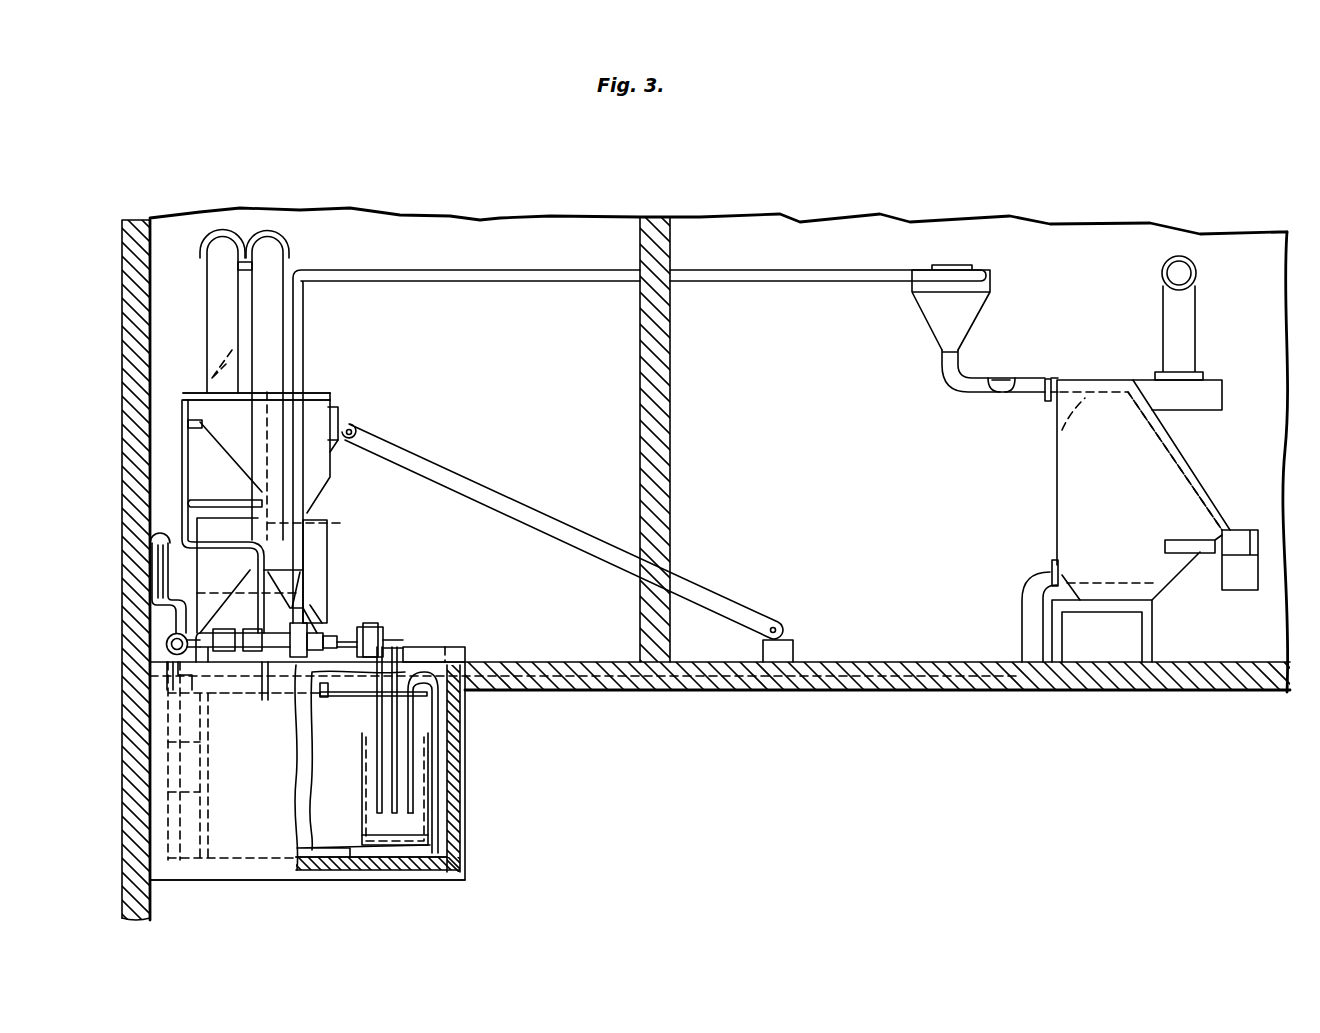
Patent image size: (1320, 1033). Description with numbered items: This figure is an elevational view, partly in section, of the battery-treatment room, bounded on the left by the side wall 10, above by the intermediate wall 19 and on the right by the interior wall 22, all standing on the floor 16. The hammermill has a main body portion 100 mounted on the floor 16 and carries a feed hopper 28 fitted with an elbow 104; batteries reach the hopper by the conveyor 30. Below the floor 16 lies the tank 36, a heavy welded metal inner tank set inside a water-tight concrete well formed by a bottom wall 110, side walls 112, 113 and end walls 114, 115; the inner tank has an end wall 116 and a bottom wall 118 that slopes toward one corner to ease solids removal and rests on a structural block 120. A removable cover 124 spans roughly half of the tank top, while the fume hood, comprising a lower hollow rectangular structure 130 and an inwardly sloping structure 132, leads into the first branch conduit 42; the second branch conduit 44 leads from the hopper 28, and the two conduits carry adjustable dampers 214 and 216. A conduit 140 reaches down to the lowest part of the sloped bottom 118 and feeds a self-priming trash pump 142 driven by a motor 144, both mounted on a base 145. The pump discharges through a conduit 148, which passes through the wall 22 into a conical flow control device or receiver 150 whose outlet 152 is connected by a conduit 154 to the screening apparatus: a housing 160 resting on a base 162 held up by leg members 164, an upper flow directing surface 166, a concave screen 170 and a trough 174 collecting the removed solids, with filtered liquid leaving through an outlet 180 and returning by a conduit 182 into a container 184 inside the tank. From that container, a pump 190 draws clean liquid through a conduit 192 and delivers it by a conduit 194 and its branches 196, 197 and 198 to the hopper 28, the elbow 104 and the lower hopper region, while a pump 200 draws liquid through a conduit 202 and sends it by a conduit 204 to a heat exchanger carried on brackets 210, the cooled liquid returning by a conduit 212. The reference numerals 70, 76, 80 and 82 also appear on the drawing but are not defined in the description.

The side wall 10 is at (122, 332).
The floor 16 is at (582, 662).
The intermediate wall 19 is at (541, 222).
The interior wall 22 is at (670, 385).
The feed hopper 28 is at (325, 393).
The conveyor 30 is at (534, 520).
The tank 36 is at (455, 652).
The first branch conduit 42 is at (298, 266).
The second branch conduit 44 is at (207, 284).
The grinder chute 70 is at (1198, 460).
The grinder unit 76 is at (1082, 380).
The mounting plate 80 is at (1222, 394).
The exhaust pipe 82 is at (1198, 320).
The main body portion 100 is at (322, 562).
The elbow 104 is at (215, 446).
The bottom wall 110 is at (298, 880).
The side wall 112 is at (236, 830).
The side wall 113 is at (460, 752).
The end wall 114 is at (168, 793).
The end wall 115 is at (460, 786).
The end wall 116 is at (460, 817).
The bottom wall 118 is at (352, 872).
The structural block 120 is at (460, 853).
The removable cover 124 is at (432, 637).
The lower hollow rectangular structure 130 is at (168, 690).
The inwardly sloping structure 132 is at (328, 598).
The conduit 140 is at (222, 662).
The pump 142 is at (308, 622).
The motor 144 is at (375, 622).
The base 145 is at (325, 630).
The conduit 148 is at (735, 282).
The flow control device 150 is at (922, 311).
The outlet 152 is at (940, 372).
The conduit 154 is at (1000, 396).
The housing 160 is at (1057, 466).
The base 162 is at (1158, 598).
The leg members 164 is at (1142, 636).
The upper flow directing surface 166 is at (1062, 422).
The screen 170 is at (168, 742).
The trough 174 is at (1240, 528).
The outlet 180 is at (1058, 562).
The conduit 182 is at (1020, 602).
The container 184 is at (372, 756).
The pump 190 is at (265, 695).
The conduit 192 is at (395, 706).
The conduit 194 is at (182, 448).
The branch conduit 196 is at (183, 395).
The branch conduit 197 is at (183, 408).
The branch conduit 198 is at (188, 503).
The pump 200 is at (166, 636).
The conduit 202 is at (165, 670).
The conduit 204 is at (158, 570).
The brackets 210 is at (155, 530).
The conduit 212 is at (163, 591).
The damper 214 is at (340, 523).
The damper 216 is at (222, 350).